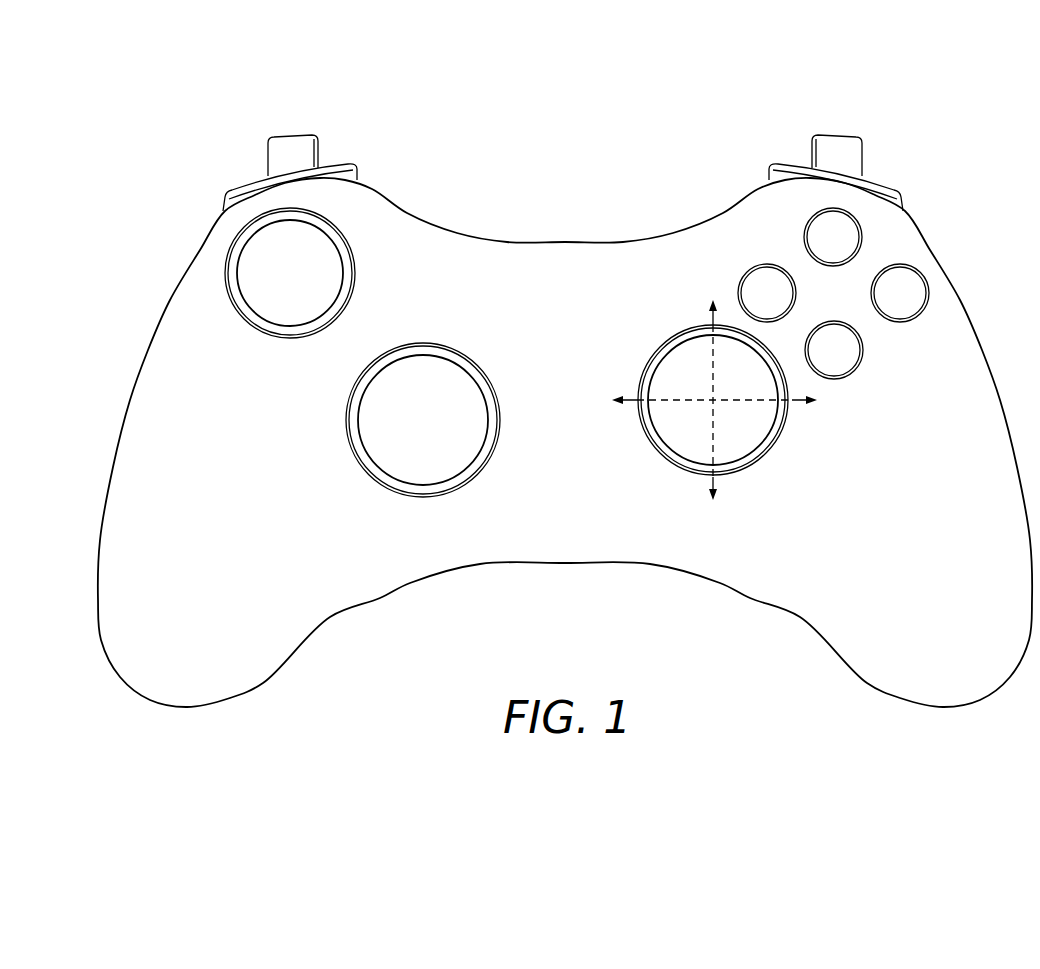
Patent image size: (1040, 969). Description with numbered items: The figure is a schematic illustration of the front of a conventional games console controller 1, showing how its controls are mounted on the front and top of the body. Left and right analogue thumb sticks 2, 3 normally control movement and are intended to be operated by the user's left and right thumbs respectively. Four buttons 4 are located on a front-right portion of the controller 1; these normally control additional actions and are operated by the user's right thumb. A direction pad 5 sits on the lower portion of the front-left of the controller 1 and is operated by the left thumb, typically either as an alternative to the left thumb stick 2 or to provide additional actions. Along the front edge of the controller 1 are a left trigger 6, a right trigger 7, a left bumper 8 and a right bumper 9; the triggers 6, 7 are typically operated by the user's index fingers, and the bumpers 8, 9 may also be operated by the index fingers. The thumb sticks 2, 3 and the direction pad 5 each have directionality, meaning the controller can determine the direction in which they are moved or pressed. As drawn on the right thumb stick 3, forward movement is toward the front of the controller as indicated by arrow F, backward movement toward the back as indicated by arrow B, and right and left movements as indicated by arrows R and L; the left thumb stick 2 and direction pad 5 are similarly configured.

The controller 1 is at (127, 314).
The left analogue thumb stick 2 is at (230, 246).
The right analogue thumb stick 3 is at (773, 447).
The buttons 4 is at (868, 262).
The direction pad 5 is at (363, 463).
The left trigger 6 is at (293, 143).
The right trigger 7 is at (835, 145).
The left bumper 8 is at (245, 192).
The right bumper 9 is at (880, 192).